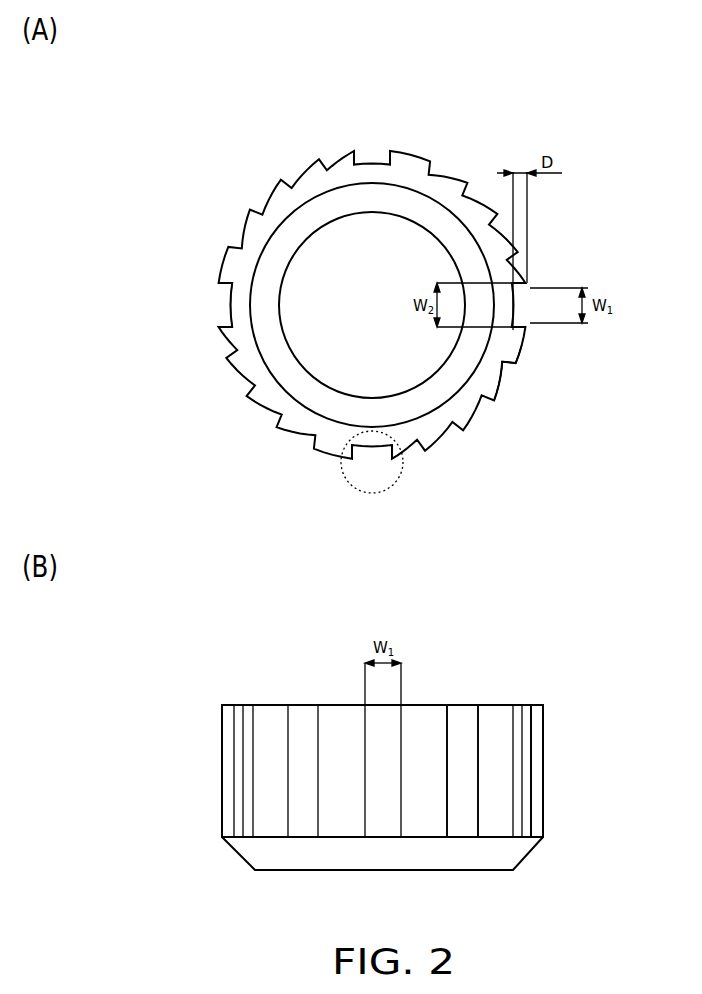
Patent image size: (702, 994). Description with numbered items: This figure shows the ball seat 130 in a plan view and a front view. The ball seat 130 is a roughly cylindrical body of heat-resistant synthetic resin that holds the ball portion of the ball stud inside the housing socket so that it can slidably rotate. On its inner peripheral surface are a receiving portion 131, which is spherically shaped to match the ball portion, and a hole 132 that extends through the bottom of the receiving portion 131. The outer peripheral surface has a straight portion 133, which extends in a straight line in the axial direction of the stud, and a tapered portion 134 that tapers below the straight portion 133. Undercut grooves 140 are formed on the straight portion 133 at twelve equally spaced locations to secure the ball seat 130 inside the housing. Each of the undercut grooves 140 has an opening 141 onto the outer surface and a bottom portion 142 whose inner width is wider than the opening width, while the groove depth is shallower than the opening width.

The ball seat 130 is at (246, 154).
The receiving portion 131 is at (372, 183).
The hole 132 is at (280, 305).
The straight portion 133 is at (222, 263).
The tapered portion 134 is at (513, 856).
The undercut grooves 140 is at (588, 372).
The opening 141 is at (504, 360).
The bottom portion 142 is at (498, 384).